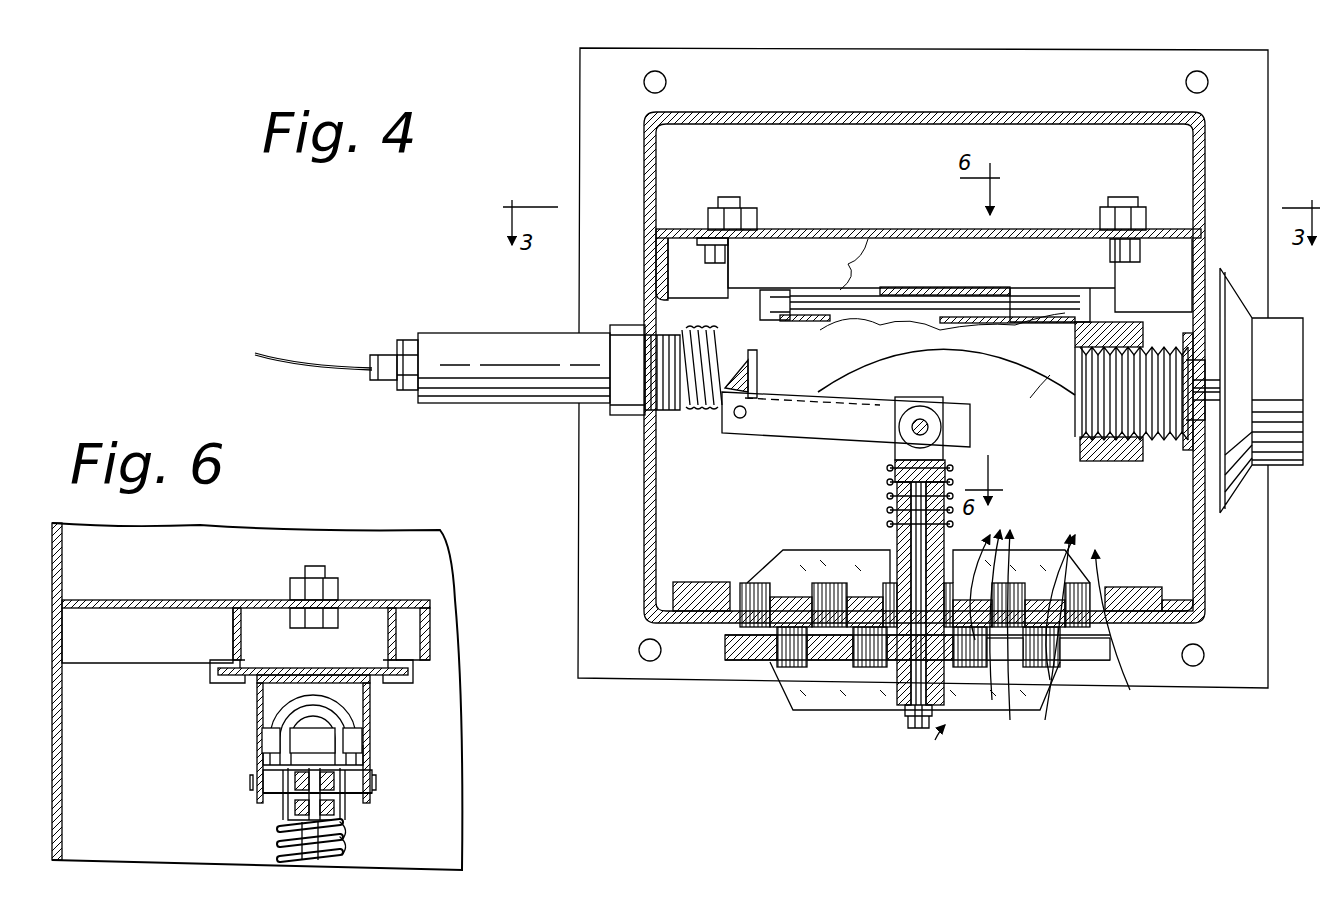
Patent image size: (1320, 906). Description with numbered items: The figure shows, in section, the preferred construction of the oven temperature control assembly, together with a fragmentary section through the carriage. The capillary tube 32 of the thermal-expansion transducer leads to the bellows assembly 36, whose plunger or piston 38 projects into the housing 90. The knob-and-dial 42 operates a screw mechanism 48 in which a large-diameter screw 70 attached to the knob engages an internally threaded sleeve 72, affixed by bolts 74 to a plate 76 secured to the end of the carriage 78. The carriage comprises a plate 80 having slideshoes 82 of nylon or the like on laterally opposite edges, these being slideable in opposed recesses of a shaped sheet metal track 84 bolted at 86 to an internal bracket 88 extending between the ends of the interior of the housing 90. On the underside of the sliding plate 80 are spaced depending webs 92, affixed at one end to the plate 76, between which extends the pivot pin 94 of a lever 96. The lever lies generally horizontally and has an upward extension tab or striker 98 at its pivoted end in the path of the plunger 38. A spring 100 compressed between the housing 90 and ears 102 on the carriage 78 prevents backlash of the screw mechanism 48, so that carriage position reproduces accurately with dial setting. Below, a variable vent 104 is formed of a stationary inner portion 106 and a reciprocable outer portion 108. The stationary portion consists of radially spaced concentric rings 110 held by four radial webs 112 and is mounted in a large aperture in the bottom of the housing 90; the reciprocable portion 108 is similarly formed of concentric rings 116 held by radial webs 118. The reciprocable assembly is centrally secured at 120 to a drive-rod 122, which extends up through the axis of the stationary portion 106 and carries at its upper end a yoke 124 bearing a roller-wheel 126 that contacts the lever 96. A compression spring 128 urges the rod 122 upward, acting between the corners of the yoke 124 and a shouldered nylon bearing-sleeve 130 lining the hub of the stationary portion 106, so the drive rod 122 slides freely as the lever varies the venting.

In FIG. 4, the capillary tube 32 is at (333, 337).
In FIG. 4, the bellows assembly 36 is at (528, 360).
In FIG. 4, the plunger or piston 38 is at (758, 362).
In FIG. 6, the plunger or piston 38 is at (358, 712).
In FIG. 4, the knob-and-dial 42 is at (1292, 368).
In FIG. 4, the screw mechanism 48 is at (1075, 455).
In FIG. 4, the large-diameter screw 70 is at (1170, 445).
In FIG. 4, the internally threaded sleeve 72 is at (1105, 460).
In FIG. 4, the bolts 74 is at (1078, 345).
In FIG. 4, the plate 76 is at (1076, 430).
In FIG. 4, the carriage 78 is at (1003, 372).
In FIG. 6, the carriage 78 is at (250, 710).
In FIG. 4, the plate 80 is at (885, 302).
In FIG. 6, the plate 80 is at (300, 668).
In FIG. 6, the slideshoes 82 is at (240, 684).
In FIG. 4, the sheet metal track 84 is at (1072, 268).
In FIG. 6, the sheet metal track 84 is at (233, 625).
In FIG. 4, the bolt 86 is at (752, 185).
In FIG. 6, the bolt 86 is at (315, 568).
In FIG. 4, the internal bracket 88 is at (710, 196).
In FIG. 6, the internal bracket 88 is at (163, 605).
In FIG. 4, the housing 90 is at (680, 122).
In FIG. 6, the housing 90 is at (110, 807).
In FIG. 4, the depending webs 92 is at (1012, 355).
In FIG. 6, the depending webs 92 is at (365, 795).
In FIG. 4, the pivot pin 94 is at (740, 420).
In FIG. 6, the pivot pin 94 is at (252, 780).
In FIG. 4, the lever 96 is at (792, 436).
In FIG. 6, the lever 96 is at (345, 805).
In FIG. 4, the striker 98 is at (755, 357).
In FIG. 6, the striker 98 is at (326, 751).
In FIG. 4, the spring 100 is at (700, 410).
In FIG. 6, the spring 100 is at (320, 730).
In FIG. 6, the ears 102 is at (355, 733).
In FIG. 4, the variable vent 104 is at (970, 752).
In FIG. 4, the stationary inner portion 106 is at (715, 555).
In FIG. 4, the reciprocable outer portion 108 is at (755, 660).
In FIG. 4, the concentric rings 110 is at (915, 605).
In FIG. 4, the radial webs 112 is at (1045, 522).
In FIG. 4, the concentric rings 116 is at (1048, 649).
In FIG. 4, the radial webs 118 is at (855, 705).
In FIG. 4, the central securing point 120 is at (918, 730).
In FIG. 4, the drive-rod 122 is at (905, 536).
In FIG. 4, the yoke 124 is at (893, 450).
In FIG. 4, the roller-wheel 126 is at (900, 406).
In FIG. 6, the roller-wheel 126 is at (305, 790).
In FIG. 4, the compression spring 128 is at (887, 478).
In FIG. 6, the compression spring 128 is at (345, 858).
In FIG. 4, the bearing-sleeve 130 is at (896, 512).